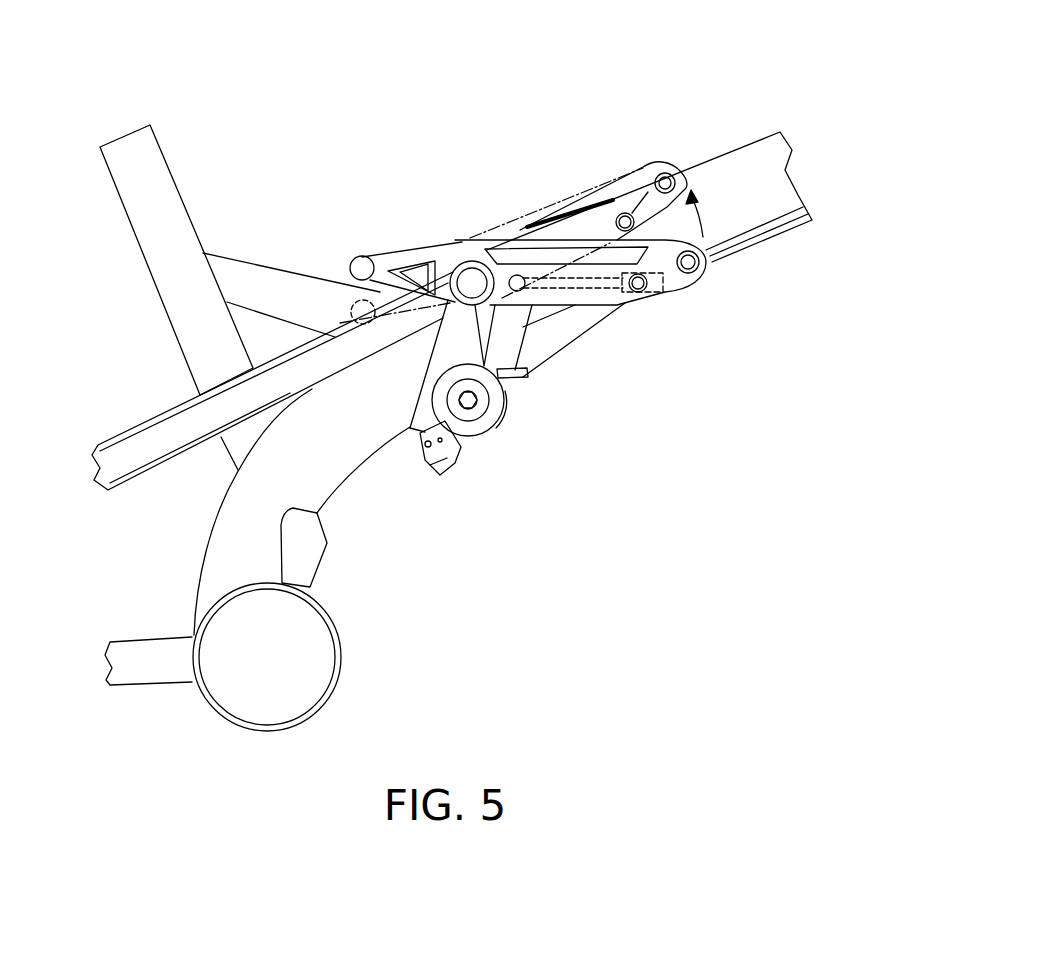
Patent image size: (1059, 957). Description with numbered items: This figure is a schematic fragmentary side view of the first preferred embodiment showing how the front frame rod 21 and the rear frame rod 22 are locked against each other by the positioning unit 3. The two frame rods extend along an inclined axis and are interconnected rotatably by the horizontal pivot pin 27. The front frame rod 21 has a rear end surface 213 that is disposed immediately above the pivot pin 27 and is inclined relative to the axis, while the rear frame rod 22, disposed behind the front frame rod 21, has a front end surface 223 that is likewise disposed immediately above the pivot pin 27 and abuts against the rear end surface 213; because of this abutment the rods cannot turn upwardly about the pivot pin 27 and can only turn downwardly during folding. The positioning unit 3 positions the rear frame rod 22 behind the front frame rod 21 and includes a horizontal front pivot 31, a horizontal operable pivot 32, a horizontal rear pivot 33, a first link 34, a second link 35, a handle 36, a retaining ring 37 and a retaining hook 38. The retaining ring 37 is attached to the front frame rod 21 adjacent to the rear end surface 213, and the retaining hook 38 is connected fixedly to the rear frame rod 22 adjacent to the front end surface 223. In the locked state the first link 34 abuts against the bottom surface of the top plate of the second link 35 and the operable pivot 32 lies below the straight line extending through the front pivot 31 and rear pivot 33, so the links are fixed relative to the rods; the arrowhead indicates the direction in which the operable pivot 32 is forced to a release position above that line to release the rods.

The positioning unit 3 is at (500, 188).
The front frame rod 21 is at (758, 243).
The rear frame rod 22 is at (343, 478).
The horizontal pivot pin 27 is at (473, 407).
The horizontal front pivot 31 is at (520, 276).
The horizontal operable pivot 32 is at (627, 214).
The horizontal rear pivot 33 is at (451, 260).
The first link 34 is at (573, 292).
The second link 35 is at (607, 305).
The handle 36 is at (515, 215).
The retaining ring 37 is at (505, 322).
The retaining hook 38 is at (442, 468).
The rear end surface 213 is at (537, 375).
The front end surface 223 is at (461, 278).